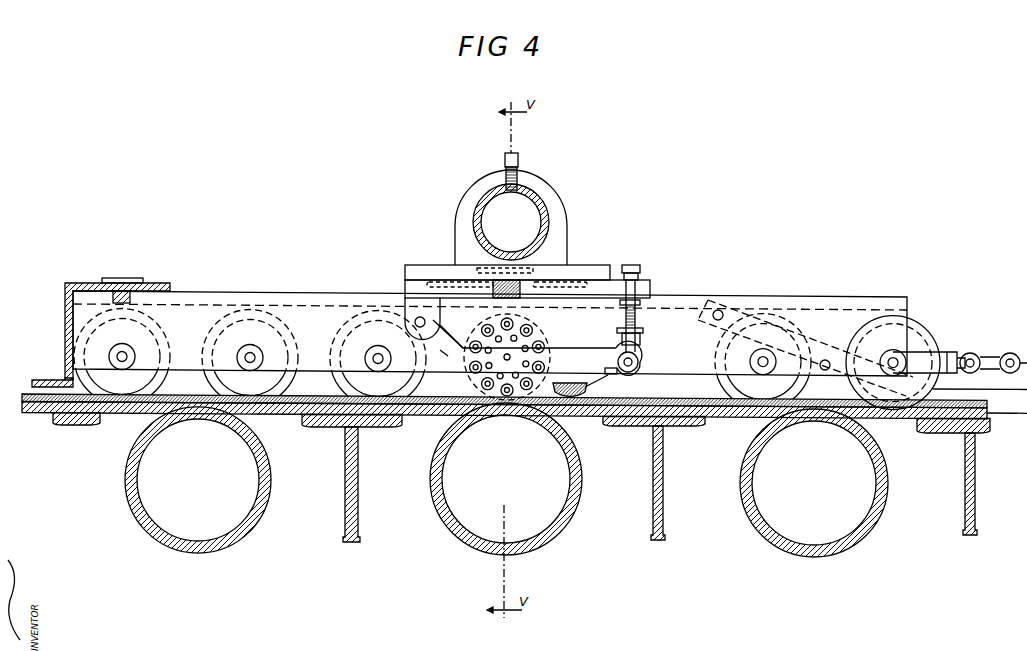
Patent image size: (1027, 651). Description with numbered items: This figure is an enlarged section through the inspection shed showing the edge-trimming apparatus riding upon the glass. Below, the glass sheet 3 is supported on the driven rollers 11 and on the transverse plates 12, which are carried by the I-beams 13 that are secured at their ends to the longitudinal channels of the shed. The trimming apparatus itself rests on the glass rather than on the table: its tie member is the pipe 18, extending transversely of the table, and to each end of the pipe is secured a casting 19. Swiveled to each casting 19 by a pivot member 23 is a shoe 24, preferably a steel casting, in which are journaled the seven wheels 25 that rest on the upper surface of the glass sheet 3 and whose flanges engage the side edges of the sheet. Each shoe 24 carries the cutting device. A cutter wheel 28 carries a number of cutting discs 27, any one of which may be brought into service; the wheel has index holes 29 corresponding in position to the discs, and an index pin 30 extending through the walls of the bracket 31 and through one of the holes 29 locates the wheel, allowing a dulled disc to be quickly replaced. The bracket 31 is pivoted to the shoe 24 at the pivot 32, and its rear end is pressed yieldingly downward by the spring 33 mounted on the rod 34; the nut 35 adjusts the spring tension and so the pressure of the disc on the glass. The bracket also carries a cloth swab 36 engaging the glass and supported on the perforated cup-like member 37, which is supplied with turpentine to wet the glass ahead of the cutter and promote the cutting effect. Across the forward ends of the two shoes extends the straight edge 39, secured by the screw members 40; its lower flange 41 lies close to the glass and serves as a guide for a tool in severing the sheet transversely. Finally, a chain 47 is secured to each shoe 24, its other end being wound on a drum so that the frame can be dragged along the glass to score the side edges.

The glass sheet 3 is at (713, 400).
The rollers 11 is at (568, 517).
The transverse plates 12 is at (730, 419).
The I-beams 13 is at (663, 477).
The pipe 18 is at (477, 211).
The castings 19 is at (420, 268).
The pivot members 23 is at (496, 278).
The shoes 24 is at (353, 298).
The wheels 25 is at (123, 386).
The cutting discs 27 is at (512, 392).
The cutter wheel 28 is at (482, 323).
The index holes 29 is at (532, 334).
The index pin 30 is at (483, 363).
The bracket 31 is at (443, 355).
The pivot 32 is at (455, 373).
The spring 33 is at (640, 313).
The rod 34 is at (634, 265).
The nut 35 is at (622, 339).
The cloth swab 36 is at (582, 398).
The cup-like member 37 is at (613, 381).
The straight edge 39 is at (65, 329).
The screw members 40 is at (126, 278).
The lower flange 41 is at (45, 380).
The chains 47 is at (992, 354).